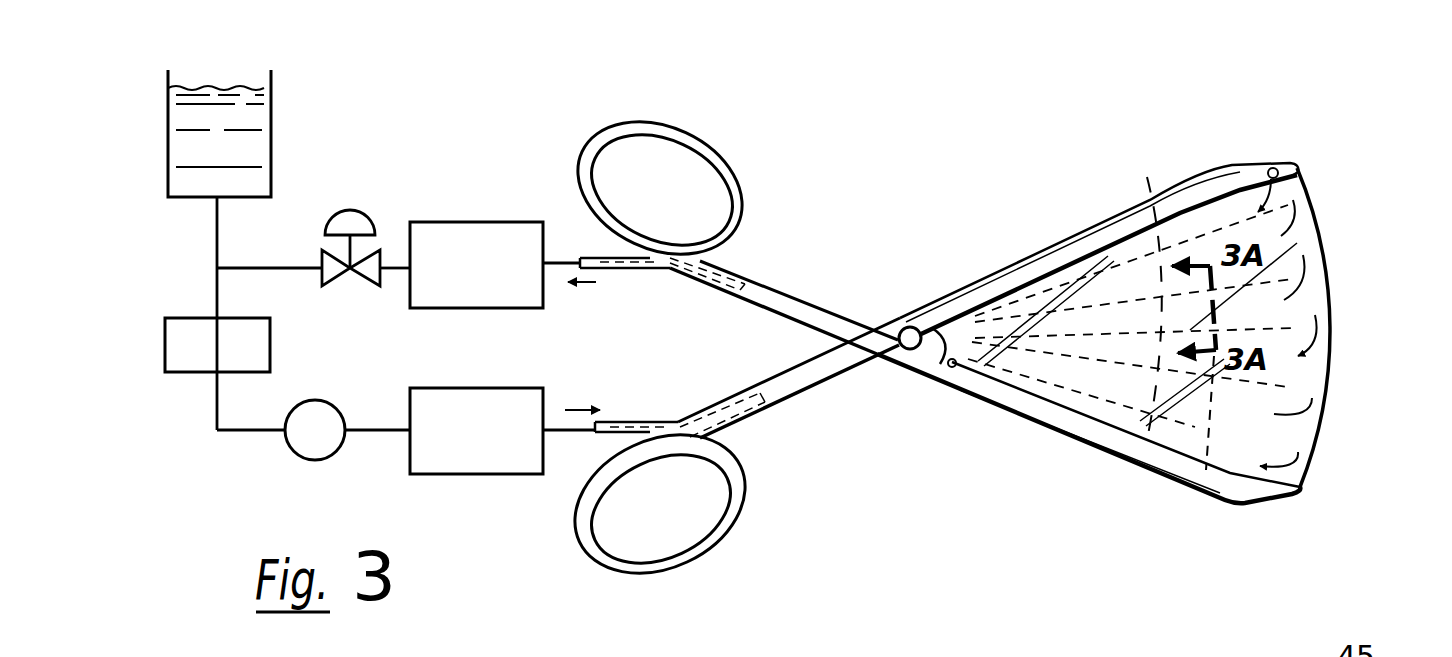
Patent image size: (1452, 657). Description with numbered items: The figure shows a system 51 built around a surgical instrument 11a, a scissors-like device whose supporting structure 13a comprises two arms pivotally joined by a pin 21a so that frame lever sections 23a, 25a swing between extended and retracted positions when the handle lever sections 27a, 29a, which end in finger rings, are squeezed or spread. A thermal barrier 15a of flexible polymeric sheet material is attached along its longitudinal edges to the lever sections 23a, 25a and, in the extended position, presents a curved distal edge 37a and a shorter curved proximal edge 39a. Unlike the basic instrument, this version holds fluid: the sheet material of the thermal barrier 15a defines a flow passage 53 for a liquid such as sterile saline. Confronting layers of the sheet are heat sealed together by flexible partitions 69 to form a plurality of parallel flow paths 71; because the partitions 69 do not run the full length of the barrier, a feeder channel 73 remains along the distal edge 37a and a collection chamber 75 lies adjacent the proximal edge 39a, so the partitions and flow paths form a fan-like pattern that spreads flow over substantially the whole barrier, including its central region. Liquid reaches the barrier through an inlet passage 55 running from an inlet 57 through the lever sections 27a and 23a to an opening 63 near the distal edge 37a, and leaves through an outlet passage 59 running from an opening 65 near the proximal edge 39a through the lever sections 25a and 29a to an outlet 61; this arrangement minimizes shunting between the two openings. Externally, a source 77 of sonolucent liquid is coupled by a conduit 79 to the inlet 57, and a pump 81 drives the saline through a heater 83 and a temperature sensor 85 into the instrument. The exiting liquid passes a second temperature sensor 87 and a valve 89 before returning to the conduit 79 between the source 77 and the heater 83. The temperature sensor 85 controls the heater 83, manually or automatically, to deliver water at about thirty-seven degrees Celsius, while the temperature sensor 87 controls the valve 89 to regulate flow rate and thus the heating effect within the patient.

The surgical instrument 11a is at (1095, 185).
The supporting structure 13a is at (968, 268).
The thermal barrier 15a is at (1335, 347).
The pin 21a is at (903, 331).
The lever section 23a is at (1213, 170).
The lever section 25a is at (1128, 478).
The lever section 27a is at (860, 362).
The lever section 29a is at (770, 300).
The distal edge 37a is at (1322, 440).
The proximal edge 39a is at (925, 313).
The system 51 is at (488, 188).
The flow passage 53 is at (1310, 226).
The inlet passage 55 is at (762, 410).
The inlet 57 is at (592, 433).
The outlet passage 59 is at (736, 272).
The outlet 61 is at (579, 258).
The opening 63 is at (1276, 170).
The opening 65 is at (955, 368).
The flexible partitions 69 is at (1208, 497).
The parallel flow paths 71 is at (1153, 200).
The feeder channel 73 is at (1315, 284).
The collection chamber 75 is at (960, 338).
The source 77 is at (178, 157).
The conduit 79 is at (215, 429).
The pump 81 is at (293, 454).
The heater 83 is at (165, 357).
The temperature sensor 85 is at (472, 476).
The temperature sensor 87 is at (428, 222).
The valve 89 is at (352, 218).